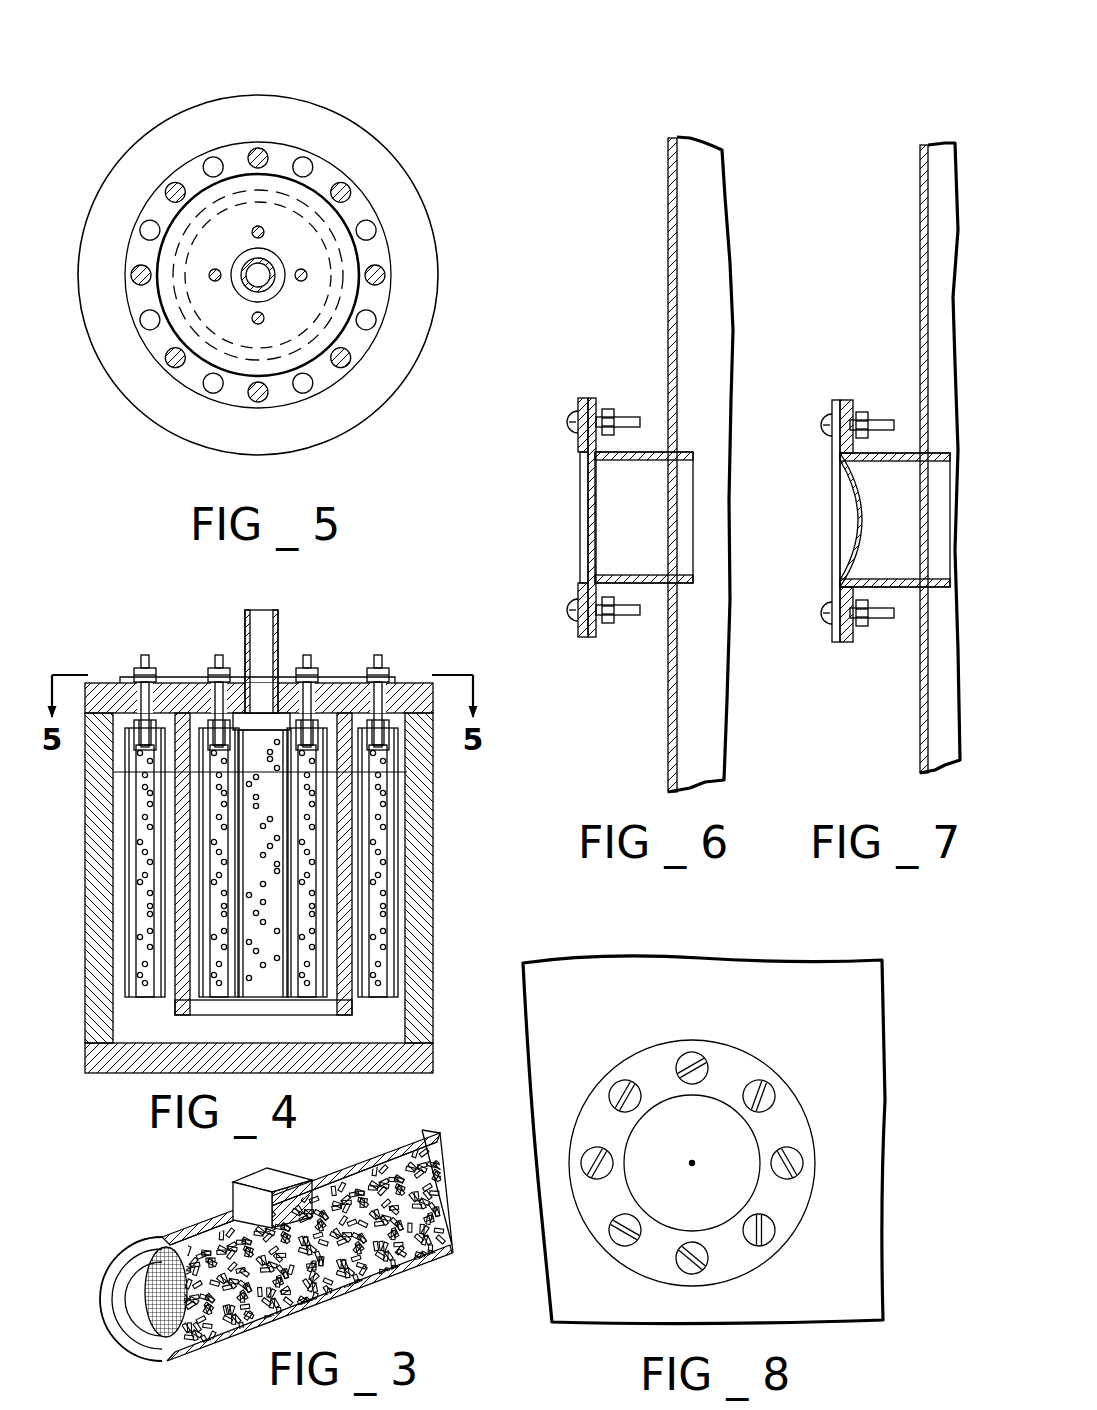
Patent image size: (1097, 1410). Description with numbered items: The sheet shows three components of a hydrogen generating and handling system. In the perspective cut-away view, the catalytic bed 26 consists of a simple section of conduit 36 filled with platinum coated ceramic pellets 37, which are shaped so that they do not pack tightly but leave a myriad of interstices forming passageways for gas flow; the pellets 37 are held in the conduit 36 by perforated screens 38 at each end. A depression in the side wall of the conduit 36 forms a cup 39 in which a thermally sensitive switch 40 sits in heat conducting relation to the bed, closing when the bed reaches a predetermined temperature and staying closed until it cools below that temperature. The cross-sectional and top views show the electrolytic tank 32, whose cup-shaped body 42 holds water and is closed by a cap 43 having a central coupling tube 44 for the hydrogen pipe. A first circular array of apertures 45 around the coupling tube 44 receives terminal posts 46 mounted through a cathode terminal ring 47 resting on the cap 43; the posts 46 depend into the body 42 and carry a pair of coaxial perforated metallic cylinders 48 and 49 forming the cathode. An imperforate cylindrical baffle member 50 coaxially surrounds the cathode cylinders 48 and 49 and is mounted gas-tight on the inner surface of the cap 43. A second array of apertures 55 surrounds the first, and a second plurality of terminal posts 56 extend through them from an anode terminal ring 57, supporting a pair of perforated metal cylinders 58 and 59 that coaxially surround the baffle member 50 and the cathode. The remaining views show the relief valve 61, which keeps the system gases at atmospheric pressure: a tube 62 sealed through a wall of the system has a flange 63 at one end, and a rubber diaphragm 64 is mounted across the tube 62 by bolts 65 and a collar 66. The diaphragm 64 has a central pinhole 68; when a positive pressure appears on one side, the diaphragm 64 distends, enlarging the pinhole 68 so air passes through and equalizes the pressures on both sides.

In FIG. 3, the catalytic bed 26 is at (259, 1247).
In FIG. 5, the electrolytic tank 32 is at (448, 140).
In FIG. 4, the electrolytic tank 32 is at (365, 623).
In FIG. 3, the conduit 36 is at (165, 1228).
In FIG. 3, the pellets 37 is at (425, 1176).
In FIG. 3, the screens 38 is at (157, 1292).
In FIG. 3, the cup 39 is at (309, 1303).
In FIG. 3, the thermally sensitive switch 40 is at (245, 1178).
In FIG. 4, the cup-shaped body 42 is at (433, 940).
In FIG. 5, the cap 43 is at (412, 318).
In FIG. 4, the cap 43 is at (413, 690).
In FIG. 5, the coupling tube 44 is at (258, 249).
In FIG. 4, the coupling tube 44 is at (281, 712).
In FIG. 4, the first plurality of apertures 45 is at (207, 690).
In FIG. 5, the terminal posts 46 is at (262, 226).
In FIG. 4, the terminal posts 46 is at (217, 655).
In FIG. 5, the cathode terminal ring 47 is at (288, 237).
In FIG. 4, the cathode terminal ring 47 is at (243, 668).
In FIG. 4, the perforated metallic cylinder 48 is at (265, 990).
In FIG. 4, the perforated metallic cylinder 49 is at (222, 988).
In FIG. 4, the baffle member 50 is at (323, 1003).
In FIG. 5, the second plurality of apertures 55 is at (218, 156).
In FIG. 4, the second plurality of apertures 55 is at (132, 690).
In FIG. 5, the second plurality of terminal posts 56 is at (257, 149).
In FIG. 4, the second plurality of terminal posts 56 is at (147, 655).
In FIG. 5, the anode terminal ring 57 is at (275, 152).
In FIG. 4, the perforated metal cylinder 58 is at (370, 826).
In FIG. 4, the perforated metal cylinder 59 is at (398, 877).
In FIG. 6, the relief valve 61 is at (624, 464).
In FIG. 7, the relief valve 61 is at (865, 458).
In FIG. 8, the relief valve 61 is at (704, 1141).
In FIG. 6, the tube 62 is at (645, 452).
In FIG. 6, the flange 63 is at (596, 640).
In FIG. 6, the rubber diaphragm 64 is at (588, 478).
In FIG. 7, the rubber diaphragm 64 is at (857, 496).
In FIG. 8, the rubber diaphragm 64 is at (733, 1187).
In FIG. 6, the bolts 65 is at (568, 412).
In FIG. 7, the bolts 65 is at (815, 430).
In FIG. 8, the bolts 65 is at (712, 1068).
In FIG. 6, the collar 66 is at (580, 448).
In FIG. 7, the collar 66 is at (846, 521).
In FIG. 8, the collar 66 is at (788, 1113).
In FIG. 6, the pinhole 68 is at (588, 515).
In FIG. 7, the pinhole 68 is at (872, 520).
In FIG. 8, the pinhole 68 is at (692, 1163).